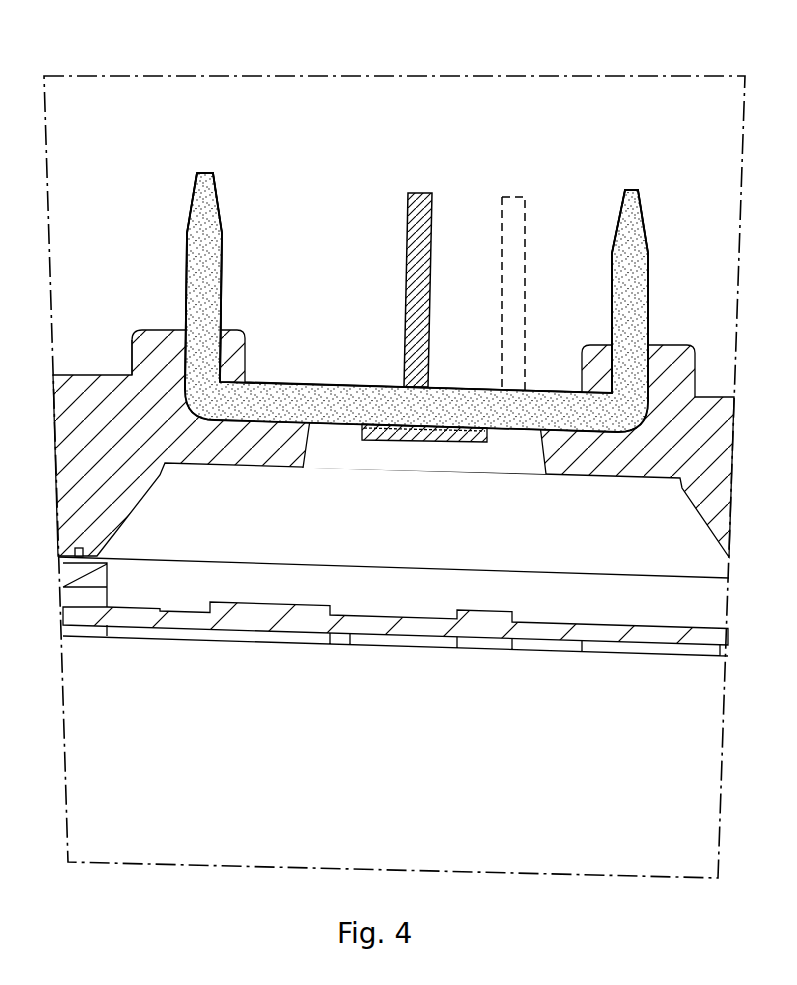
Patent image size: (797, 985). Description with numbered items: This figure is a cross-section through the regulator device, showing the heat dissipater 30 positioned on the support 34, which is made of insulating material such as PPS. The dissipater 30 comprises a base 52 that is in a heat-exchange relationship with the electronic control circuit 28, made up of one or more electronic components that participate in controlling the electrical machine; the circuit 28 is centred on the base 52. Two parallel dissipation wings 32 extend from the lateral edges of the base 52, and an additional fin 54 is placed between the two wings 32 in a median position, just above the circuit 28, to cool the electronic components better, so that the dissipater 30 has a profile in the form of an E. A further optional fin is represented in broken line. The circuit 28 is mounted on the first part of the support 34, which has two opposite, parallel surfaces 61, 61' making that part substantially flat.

The heat dissipater 30 is at (445, 118).
The dissipation wings 32 is at (222, 288).
The support 34 is at (88, 405).
The base 52 is at (336, 384).
The additional fin 54 is at (405, 257).
The electronic control circuit 28 is at (418, 444).
The first surface of the first part 61 is at (140, 313).
The second surface of the first part 61' is at (62, 638).